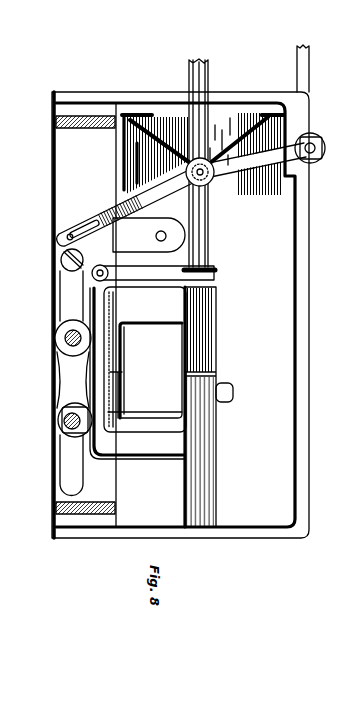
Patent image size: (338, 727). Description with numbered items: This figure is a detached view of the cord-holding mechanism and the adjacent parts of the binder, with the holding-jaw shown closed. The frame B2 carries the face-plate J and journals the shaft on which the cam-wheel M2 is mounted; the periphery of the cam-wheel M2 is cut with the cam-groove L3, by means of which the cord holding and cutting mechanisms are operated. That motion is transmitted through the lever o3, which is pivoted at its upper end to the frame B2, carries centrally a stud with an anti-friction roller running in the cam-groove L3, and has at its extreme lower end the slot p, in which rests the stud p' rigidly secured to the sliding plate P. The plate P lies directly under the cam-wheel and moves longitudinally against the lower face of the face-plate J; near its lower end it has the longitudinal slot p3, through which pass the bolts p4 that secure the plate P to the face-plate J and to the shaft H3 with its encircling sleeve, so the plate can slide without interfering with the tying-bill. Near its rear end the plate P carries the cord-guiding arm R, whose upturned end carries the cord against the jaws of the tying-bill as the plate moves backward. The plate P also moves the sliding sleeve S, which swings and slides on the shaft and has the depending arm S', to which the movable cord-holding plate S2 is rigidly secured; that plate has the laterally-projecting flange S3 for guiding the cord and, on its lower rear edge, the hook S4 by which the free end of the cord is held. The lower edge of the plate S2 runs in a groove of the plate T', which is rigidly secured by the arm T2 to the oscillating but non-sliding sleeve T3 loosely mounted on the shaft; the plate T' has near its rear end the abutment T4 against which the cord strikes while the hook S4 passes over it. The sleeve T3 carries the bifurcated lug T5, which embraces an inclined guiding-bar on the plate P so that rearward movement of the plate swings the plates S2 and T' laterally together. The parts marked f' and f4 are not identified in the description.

The cam-wheel M2 is at (165, 118).
The cam-groove L3 is at (248, 118).
The lever o3 is at (214, 168).
The slot p is at (191, 189).
The stud p' is at (51, 221).
The bolts p4 is at (61, 262).
The face-plate J is at (149, 235).
The sliding plate P is at (153, 262).
The cord-guiding arm R is at (173, 280).
The shaft H3 is at (65, 337).
The link f' is at (73, 380).
The pivot f4 is at (57, 420).
The longitudinal slot p3 is at (72, 465).
The arm T2 is at (118, 432).
The depending arm S' is at (145, 359).
The movable cord-holding plate S2 is at (113, 348).
The hook S4 is at (112, 325).
The flange S3 is at (115, 380).
The abutment T4 is at (144, 370).
The plate T' is at (145, 419).
The sliding sleeve S is at (212, 407).
The oscillating non-sliding sleeve T3 is at (207, 447).
The bifurcated lug T5 is at (235, 401).
The frame B2 is at (315, 166).